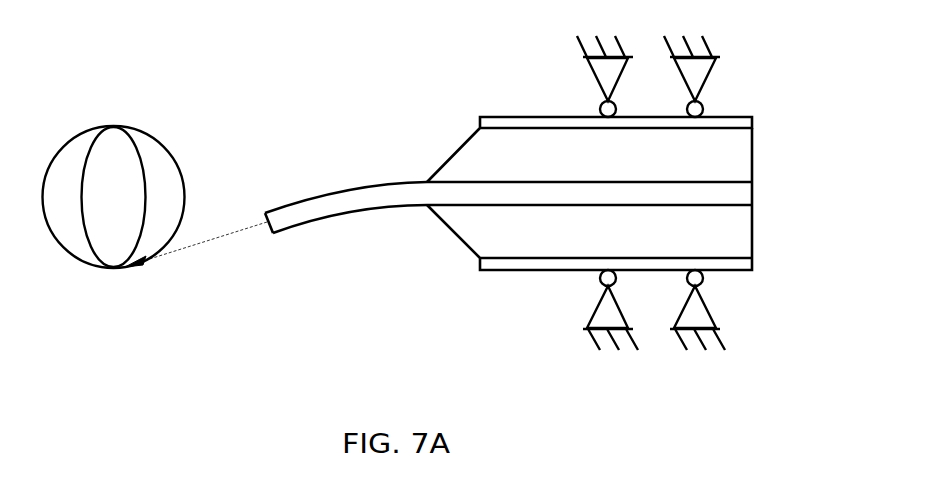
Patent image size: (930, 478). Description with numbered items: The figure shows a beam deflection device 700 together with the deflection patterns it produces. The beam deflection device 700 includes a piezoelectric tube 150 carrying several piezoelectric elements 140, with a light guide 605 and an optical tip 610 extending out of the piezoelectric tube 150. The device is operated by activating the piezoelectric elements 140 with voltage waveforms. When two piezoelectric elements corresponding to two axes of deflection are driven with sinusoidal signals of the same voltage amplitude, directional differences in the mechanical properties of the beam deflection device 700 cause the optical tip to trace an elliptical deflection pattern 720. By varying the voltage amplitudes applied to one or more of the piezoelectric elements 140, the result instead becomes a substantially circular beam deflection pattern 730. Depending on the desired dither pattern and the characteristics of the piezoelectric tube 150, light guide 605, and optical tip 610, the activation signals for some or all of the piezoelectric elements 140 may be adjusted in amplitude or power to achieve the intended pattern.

The piezoelectric elements 140 is at (706, 83).
The piezoelectric tube 150 is at (523, 262).
The light guide 605 is at (512, 187).
The optical tip 610 is at (342, 202).
The beam deflection device 700 is at (368, 120).
The deflection pattern 720 is at (85, 158).
The substantially circular beam deflection pattern 730 is at (75, 258).